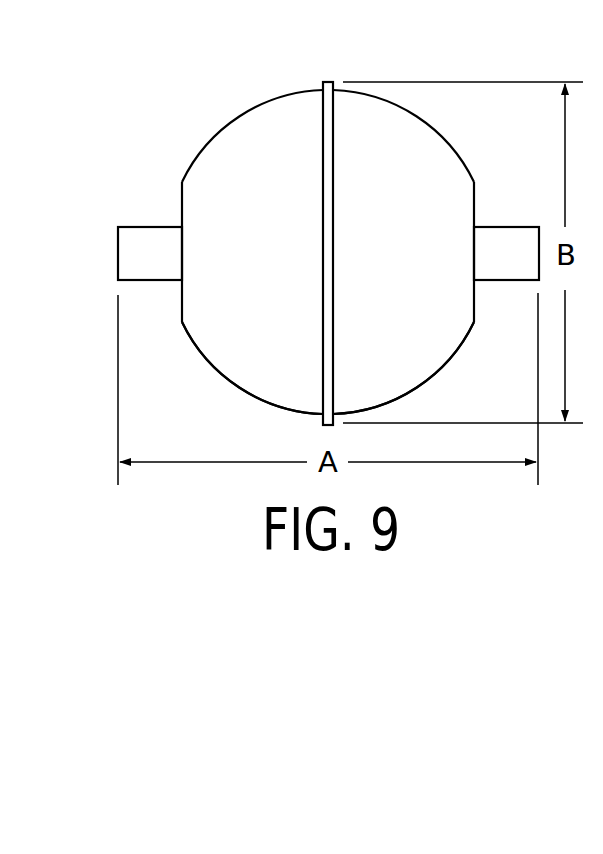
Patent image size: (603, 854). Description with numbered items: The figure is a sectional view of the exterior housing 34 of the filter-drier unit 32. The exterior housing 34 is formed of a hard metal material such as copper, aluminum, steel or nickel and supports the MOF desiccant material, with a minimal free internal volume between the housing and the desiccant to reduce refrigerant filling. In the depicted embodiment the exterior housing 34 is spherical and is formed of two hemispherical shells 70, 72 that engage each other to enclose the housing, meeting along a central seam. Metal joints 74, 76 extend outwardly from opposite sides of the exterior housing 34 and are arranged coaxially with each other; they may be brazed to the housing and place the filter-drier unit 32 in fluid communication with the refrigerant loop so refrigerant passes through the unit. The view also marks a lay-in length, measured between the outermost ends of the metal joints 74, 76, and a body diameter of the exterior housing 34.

The filter-drier unit 32 is at (164, 110).
The exterior housing 34 is at (206, 185).
The hemispherical shell 70 is at (226, 342).
The hemispherical shell 72 is at (454, 322).
The metal joint 74 is at (130, 253).
The metal joint 76 is at (513, 243).